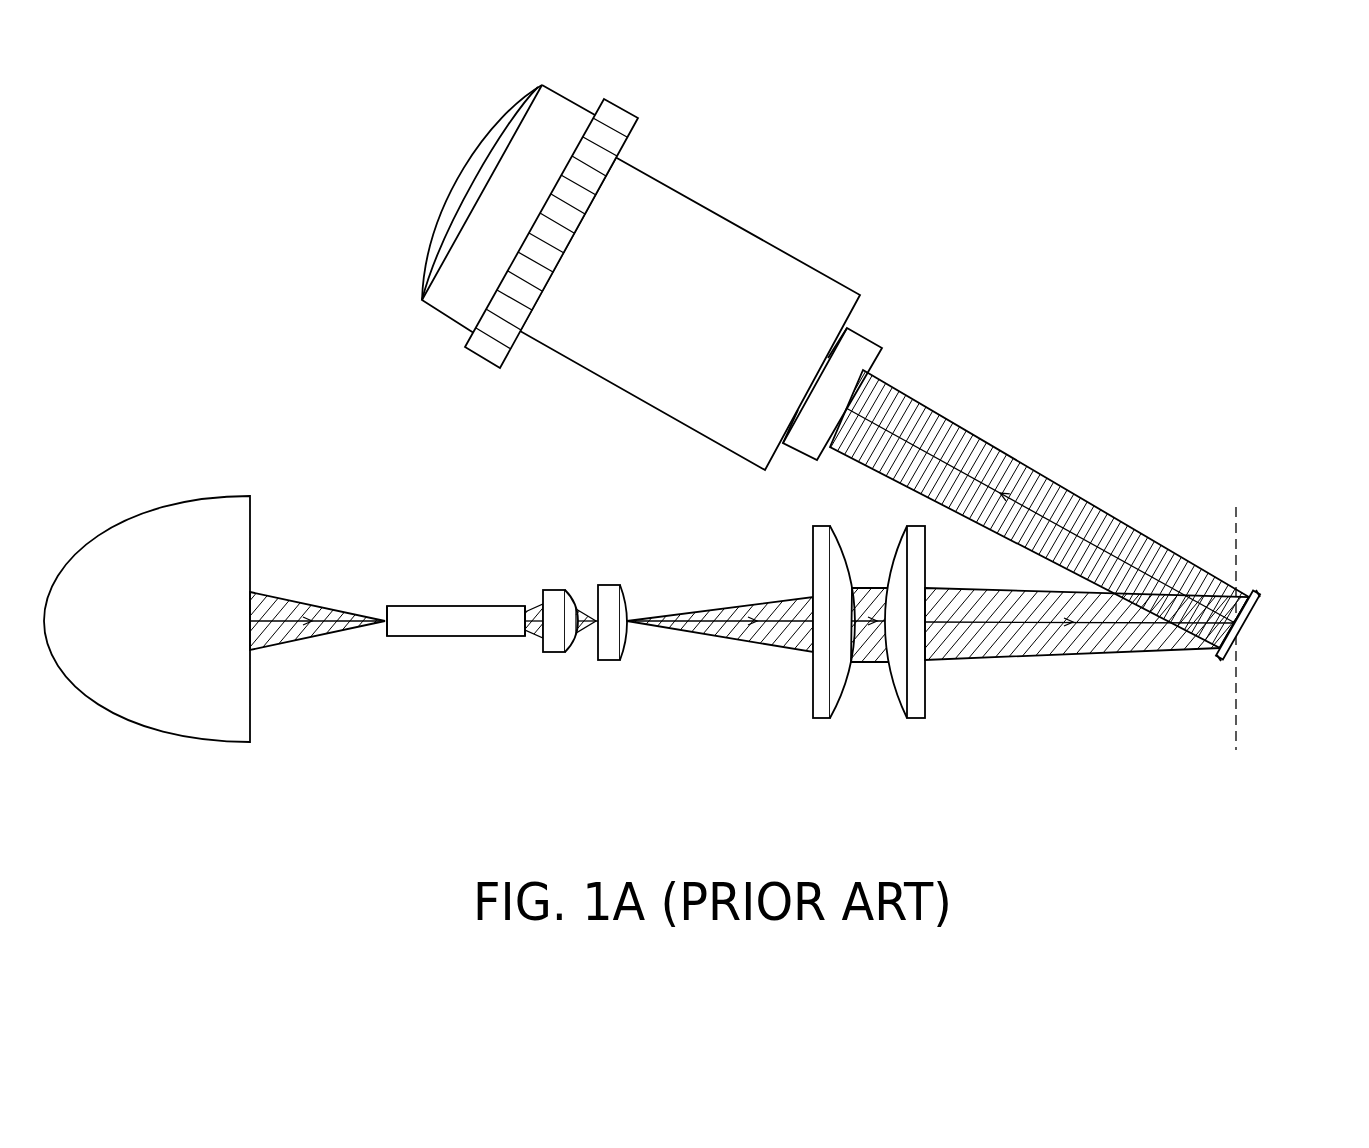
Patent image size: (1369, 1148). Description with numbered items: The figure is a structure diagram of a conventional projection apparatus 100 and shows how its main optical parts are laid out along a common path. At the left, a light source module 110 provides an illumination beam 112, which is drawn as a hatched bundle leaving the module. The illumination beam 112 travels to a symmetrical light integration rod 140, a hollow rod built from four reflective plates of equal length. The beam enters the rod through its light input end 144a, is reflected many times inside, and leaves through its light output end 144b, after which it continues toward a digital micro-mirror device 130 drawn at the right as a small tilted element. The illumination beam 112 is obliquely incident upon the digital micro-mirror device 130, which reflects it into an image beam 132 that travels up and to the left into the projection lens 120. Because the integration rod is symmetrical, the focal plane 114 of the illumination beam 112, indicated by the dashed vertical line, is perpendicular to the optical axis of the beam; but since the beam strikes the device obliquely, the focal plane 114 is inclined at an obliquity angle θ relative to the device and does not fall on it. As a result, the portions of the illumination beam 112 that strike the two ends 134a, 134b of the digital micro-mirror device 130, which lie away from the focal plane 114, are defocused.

The projection apparatus 100 is at (1258, 818).
The light source module 110 is at (173, 540).
The illumination beam 112 is at (303, 608).
The focal plane 114 is at (1240, 535).
The projection lens 120 is at (695, 245).
The digital micro-mirror device 130 is at (1244, 632).
The image beam 132 is at (1163, 563).
The end of the DMD 134a is at (1263, 595).
The end of the DMD 134b is at (1217, 657).
The symmetrical light integration rod 140 is at (452, 622).
The light input end 144a is at (385, 608).
The light output end 144b is at (537, 612).